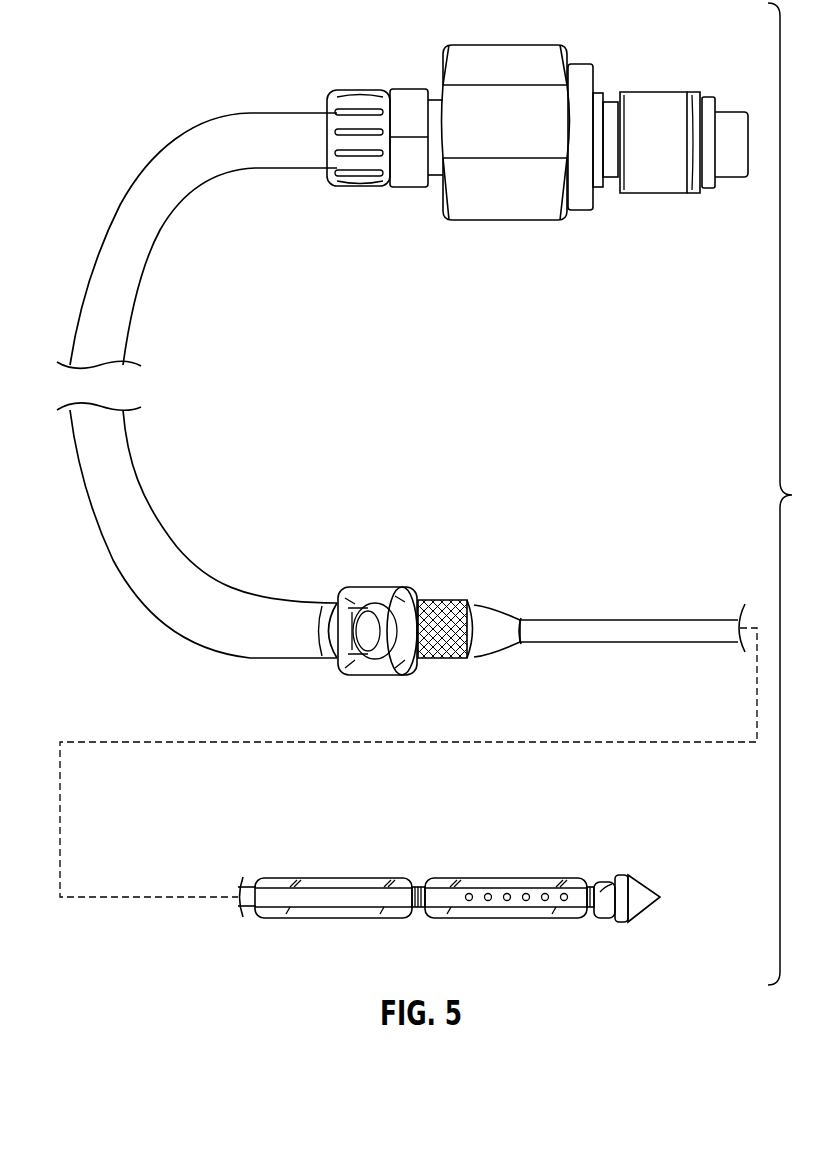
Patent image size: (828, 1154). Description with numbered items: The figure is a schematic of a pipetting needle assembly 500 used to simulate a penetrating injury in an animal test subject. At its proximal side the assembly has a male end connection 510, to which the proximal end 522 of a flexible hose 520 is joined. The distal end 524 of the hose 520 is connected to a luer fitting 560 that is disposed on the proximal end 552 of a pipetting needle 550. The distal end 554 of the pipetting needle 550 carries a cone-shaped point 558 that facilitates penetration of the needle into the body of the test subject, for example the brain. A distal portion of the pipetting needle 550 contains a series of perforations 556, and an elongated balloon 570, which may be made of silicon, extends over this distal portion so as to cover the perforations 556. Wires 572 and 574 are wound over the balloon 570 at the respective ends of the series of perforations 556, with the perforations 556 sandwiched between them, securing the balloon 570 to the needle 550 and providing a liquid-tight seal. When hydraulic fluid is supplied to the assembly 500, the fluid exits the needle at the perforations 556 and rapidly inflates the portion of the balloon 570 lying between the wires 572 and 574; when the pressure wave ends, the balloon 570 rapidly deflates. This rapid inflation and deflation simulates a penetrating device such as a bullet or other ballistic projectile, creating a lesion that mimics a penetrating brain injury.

The pipetting needle assembly 500 is at (166, 102).
The male end connection 510 is at (517, 55).
The flexible hose 520 is at (99, 280).
The proximal end of flexible hose 522 is at (317, 85).
The distal end of hose 524 is at (304, 587).
The pipetting needle 550 is at (588, 628).
The proximal end of pipetting needle 552 is at (484, 597).
The distal end of pipetting needle 554 is at (640, 926).
The perforations 556 is at (525, 900).
The cone-shaped point 558 is at (643, 896).
The luer fitting 560 is at (370, 592).
The elongated balloon 570 is at (320, 879).
The wire 572 is at (420, 912).
The wire 574 is at (587, 887).